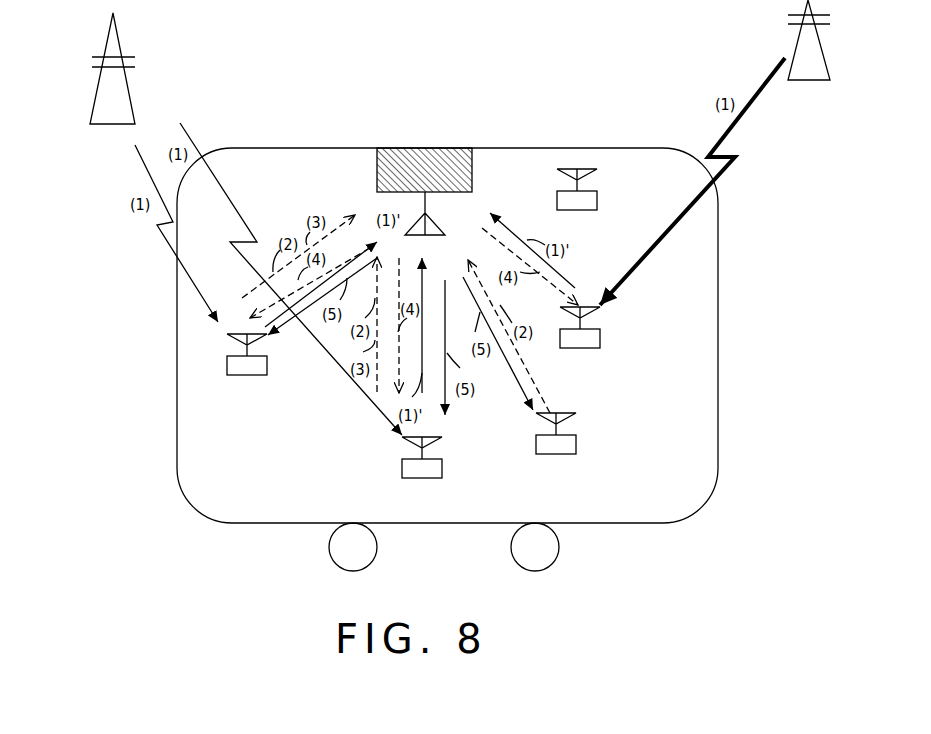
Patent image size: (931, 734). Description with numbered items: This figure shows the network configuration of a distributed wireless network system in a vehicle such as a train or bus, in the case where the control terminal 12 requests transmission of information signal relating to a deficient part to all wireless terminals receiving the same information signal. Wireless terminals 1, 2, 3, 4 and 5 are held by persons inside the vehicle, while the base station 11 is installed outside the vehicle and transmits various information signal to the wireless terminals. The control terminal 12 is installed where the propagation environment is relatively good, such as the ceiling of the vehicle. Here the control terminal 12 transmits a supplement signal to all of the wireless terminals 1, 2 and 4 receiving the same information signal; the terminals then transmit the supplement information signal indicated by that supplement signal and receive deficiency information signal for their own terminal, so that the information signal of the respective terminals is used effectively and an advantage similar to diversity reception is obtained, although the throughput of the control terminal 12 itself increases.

The wireless terminal 1 is at (257, 367).
The wireless terminal 2 is at (410, 468).
The wireless terminal 3 is at (567, 448).
The wireless terminal 4 is at (593, 342).
The wireless terminal 5 is at (587, 202).
The base station 11 is at (115, 124).
The control terminal 12 is at (443, 165).